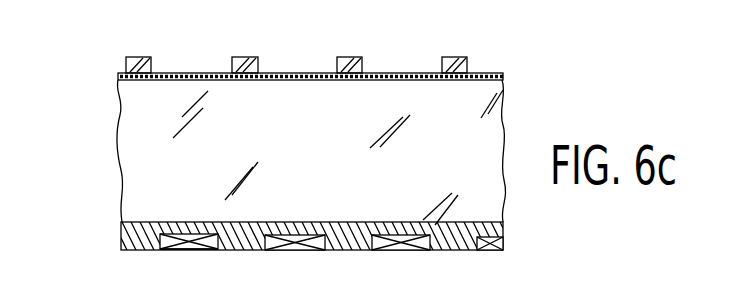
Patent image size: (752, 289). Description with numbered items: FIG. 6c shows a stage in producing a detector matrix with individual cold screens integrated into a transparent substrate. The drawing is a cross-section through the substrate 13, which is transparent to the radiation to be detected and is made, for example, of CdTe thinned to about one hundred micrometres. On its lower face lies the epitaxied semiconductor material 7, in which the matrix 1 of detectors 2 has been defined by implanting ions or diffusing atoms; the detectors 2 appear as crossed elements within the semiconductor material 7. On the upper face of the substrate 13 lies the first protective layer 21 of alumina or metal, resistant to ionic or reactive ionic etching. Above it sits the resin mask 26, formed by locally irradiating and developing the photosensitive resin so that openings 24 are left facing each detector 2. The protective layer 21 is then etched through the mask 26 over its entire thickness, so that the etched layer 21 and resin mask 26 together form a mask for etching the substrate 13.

The matrix 1 is at (165, 252).
The detector 2 is at (486, 250).
The semiconductor material 7 is at (121, 226).
The substrate 13 is at (145, 122).
The first protective layer 21 is at (118, 74).
The openings 24 is at (193, 64).
The resin mask 26 is at (114, 59).